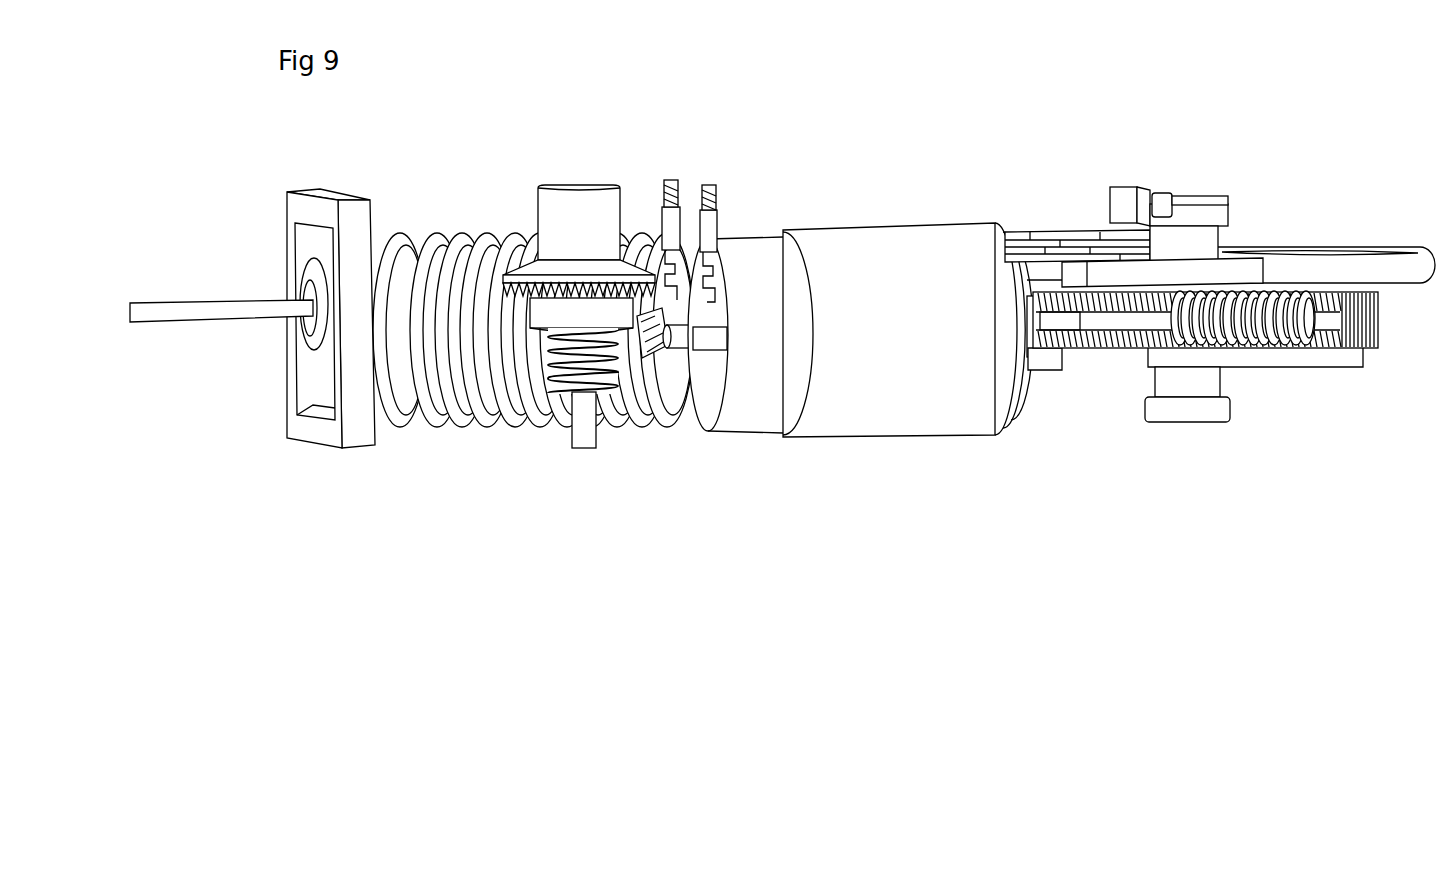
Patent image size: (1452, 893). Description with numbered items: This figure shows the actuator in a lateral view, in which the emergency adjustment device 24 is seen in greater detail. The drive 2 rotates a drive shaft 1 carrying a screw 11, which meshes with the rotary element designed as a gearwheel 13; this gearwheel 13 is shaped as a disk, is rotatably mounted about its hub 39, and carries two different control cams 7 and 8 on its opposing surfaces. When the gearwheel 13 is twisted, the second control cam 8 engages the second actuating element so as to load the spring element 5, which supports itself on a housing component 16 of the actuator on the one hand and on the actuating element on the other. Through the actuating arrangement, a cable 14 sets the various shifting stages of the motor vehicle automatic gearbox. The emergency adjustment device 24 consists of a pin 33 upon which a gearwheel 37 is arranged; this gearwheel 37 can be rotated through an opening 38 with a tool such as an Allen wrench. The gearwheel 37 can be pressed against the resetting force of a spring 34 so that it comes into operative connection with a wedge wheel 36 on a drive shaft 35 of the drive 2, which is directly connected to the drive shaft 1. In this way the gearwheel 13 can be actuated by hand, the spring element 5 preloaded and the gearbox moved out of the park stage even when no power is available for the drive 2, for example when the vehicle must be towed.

The drive shaft 1 is at (1115, 322).
The drive 2 is at (912, 415).
The spring element 5 is at (450, 245).
The control cam 7 is at (1390, 248).
The second control cam 8 is at (1298, 355).
The screw 11 is at (1248, 322).
The gearwheel 13 is at (1375, 340).
The cable 14 is at (226, 318).
The housing component 16 is at (356, 427).
The emergency adjustment device 24 is at (579, 318).
The pin 33 is at (580, 440).
The spring 34 is at (553, 405).
The drive shaft 35 is at (683, 405).
The wedge wheel 36 is at (650, 400).
The gearwheel 37 is at (652, 228).
The opening 38 is at (585, 187).
The hub 39 is at (1183, 410).